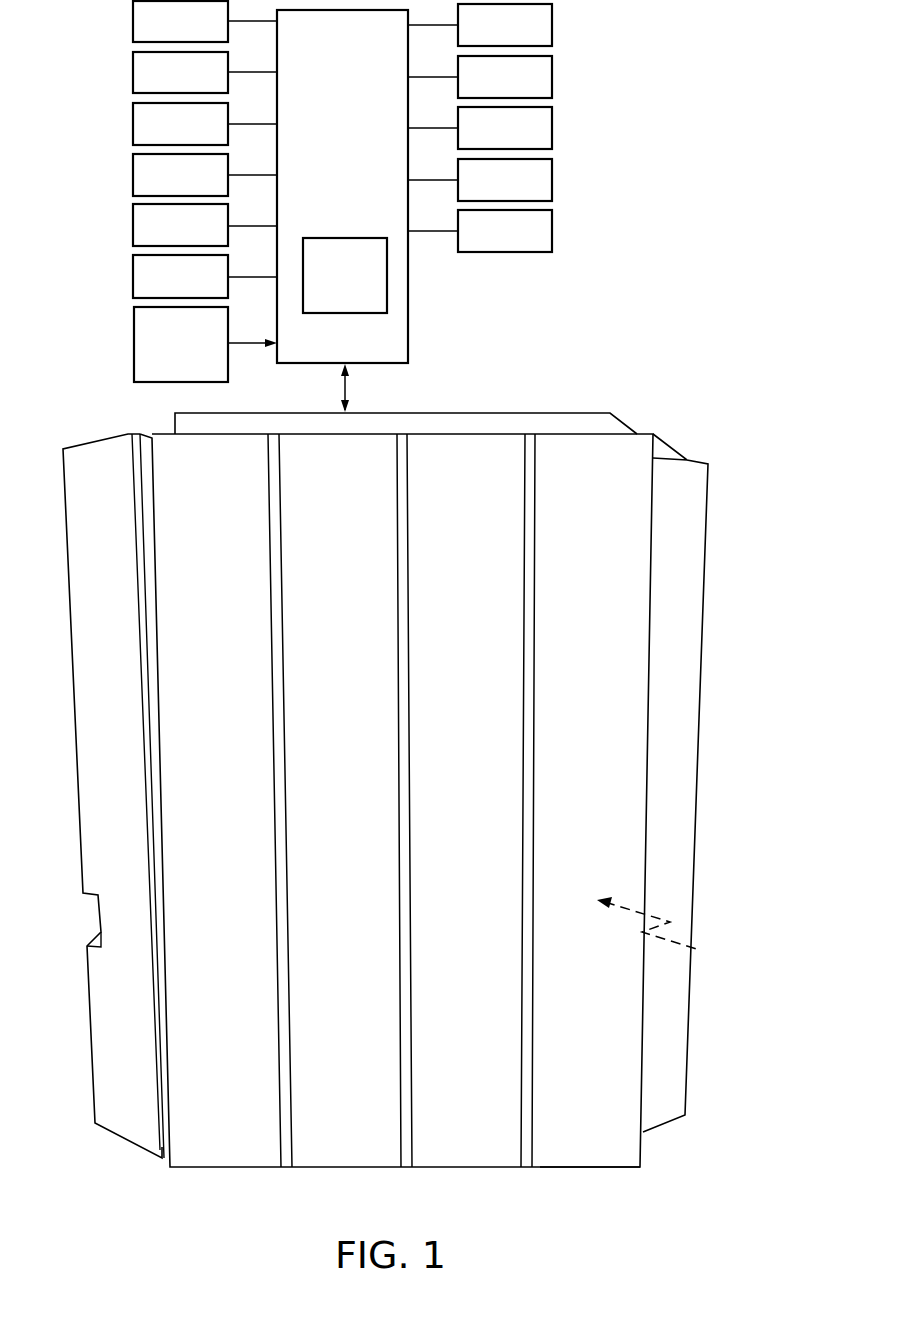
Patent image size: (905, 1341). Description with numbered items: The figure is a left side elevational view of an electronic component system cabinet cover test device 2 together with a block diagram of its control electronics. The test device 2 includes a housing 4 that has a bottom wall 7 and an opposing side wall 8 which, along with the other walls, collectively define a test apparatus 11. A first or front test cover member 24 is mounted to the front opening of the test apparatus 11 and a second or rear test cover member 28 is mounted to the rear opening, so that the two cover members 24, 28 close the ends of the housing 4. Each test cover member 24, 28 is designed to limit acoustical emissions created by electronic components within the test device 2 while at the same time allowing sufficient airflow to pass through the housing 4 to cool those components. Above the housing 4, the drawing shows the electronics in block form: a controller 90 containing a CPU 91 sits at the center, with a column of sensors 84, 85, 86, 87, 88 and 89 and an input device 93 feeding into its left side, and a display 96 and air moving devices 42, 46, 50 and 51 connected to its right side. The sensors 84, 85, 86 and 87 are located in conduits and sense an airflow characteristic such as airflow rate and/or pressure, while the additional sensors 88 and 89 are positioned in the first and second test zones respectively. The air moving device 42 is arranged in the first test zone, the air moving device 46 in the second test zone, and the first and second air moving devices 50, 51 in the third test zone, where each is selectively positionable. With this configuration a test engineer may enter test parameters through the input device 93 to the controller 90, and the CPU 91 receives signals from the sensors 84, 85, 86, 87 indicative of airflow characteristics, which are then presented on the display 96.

The test device 2 is at (198, 1190).
The housing 4 is at (493, 1170).
The bottom wall 7 is at (590, 1170).
The side wall 8 is at (574, 452).
The test apparatus 11 is at (668, 933).
The front test cover member 24 is at (700, 709).
The rear test cover member 28 is at (74, 711).
The air moving device 42 is at (553, 76).
The air moving device 46 is at (553, 127).
The first air moving device 50 is at (553, 178).
The second air moving device 51 is at (553, 229).
The sensor 84 is at (133, 22).
The sensor 85 is at (133, 73).
The sensor 86 is at (133, 124).
The sensor 87 is at (133, 175).
The sensor 88 is at (133, 226).
The sensor 89 is at (133, 277).
The controller 90 is at (410, 334).
The CPU 91 is at (343, 238).
The input device 93 is at (133, 344).
The display 96 is at (553, 24).